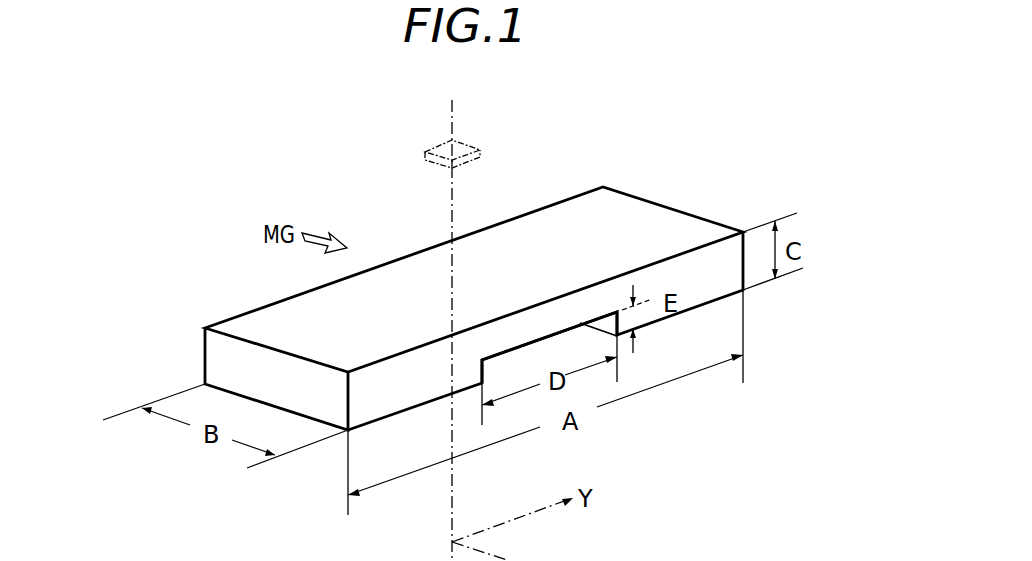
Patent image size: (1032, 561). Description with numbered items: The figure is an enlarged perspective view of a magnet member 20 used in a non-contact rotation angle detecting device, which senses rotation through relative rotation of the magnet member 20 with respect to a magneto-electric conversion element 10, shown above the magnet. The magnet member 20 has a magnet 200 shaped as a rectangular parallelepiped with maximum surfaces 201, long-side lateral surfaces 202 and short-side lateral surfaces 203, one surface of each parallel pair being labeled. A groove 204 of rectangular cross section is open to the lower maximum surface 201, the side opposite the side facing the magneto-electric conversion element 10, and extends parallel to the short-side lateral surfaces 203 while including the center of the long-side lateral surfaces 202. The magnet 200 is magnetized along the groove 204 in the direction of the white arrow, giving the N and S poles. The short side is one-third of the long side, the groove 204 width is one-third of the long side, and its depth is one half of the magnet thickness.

The magneto-electric conversion element 10 is at (472, 145).
The magnet member 20 is at (506, 290).
The magnet 200 is at (506, 290).
The maximum surface 201 is at (680, 223).
The long-side lateral surface 202 is at (722, 280).
The short-side lateral surface 203 is at (232, 357).
The groove 204 is at (602, 325).